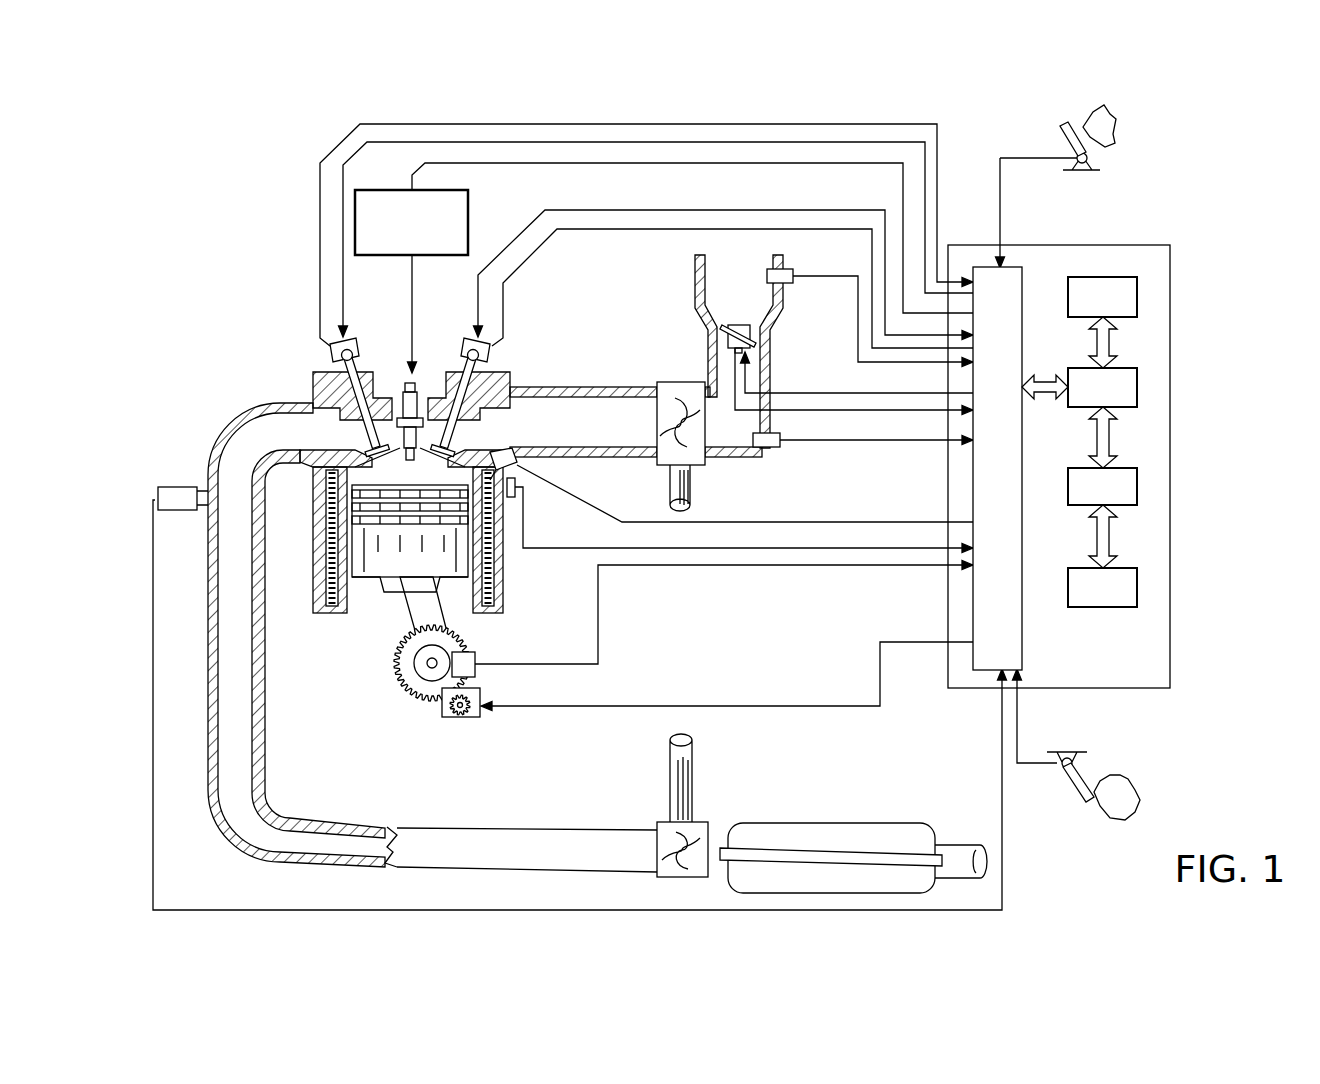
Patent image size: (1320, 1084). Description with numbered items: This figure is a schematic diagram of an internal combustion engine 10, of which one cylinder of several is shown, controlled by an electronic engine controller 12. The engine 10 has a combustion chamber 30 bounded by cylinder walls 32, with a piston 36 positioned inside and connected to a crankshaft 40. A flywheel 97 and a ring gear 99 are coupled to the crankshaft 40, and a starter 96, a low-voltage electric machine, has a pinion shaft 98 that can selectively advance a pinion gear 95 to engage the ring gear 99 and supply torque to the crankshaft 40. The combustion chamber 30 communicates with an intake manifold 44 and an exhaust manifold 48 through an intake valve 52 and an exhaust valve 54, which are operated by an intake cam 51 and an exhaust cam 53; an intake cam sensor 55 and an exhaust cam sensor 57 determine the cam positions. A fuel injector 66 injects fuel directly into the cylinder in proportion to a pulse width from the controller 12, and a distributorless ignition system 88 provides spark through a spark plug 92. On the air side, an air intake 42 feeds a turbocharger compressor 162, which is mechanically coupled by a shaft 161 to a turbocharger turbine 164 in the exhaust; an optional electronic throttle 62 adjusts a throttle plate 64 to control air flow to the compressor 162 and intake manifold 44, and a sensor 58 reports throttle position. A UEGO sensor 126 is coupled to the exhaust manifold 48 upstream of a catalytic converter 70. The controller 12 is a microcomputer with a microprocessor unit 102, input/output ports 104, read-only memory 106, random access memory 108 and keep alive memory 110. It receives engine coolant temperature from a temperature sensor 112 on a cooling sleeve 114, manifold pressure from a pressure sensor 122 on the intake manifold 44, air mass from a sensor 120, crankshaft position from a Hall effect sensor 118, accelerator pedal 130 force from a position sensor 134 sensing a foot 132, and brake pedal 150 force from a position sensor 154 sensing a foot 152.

The internal combustion engine 10 is at (250, 326).
The electronic engine controller 12 is at (1160, 245).
The combustion chamber 30 is at (405, 468).
The cylinder walls 32 is at (355, 600).
The piston 36 is at (393, 563).
The crankshaft 40 is at (414, 694).
The air intake 42 is at (726, 303).
The intake manifold 44 is at (571, 435).
The exhaust manifold 48 is at (270, 444).
The intake cam 51 is at (470, 332).
The intake valve 52 is at (455, 433).
The exhaust cam 53 is at (350, 332).
The exhaust valve 54 is at (345, 412).
The intake cam sensor 55 is at (488, 352).
The exhaust cam sensor 57 is at (325, 355).
The throttle position sensor 58 is at (715, 350).
The electronic throttle 62 is at (745, 331).
The throttle plate 64 is at (723, 337).
The fuel injector 66 is at (518, 466).
The catalytic converter 70 is at (767, 822).
The distributorless ignition system 88 is at (368, 190).
The spark plug 92 is at (414, 378).
The pinion gear 95 is at (473, 720).
The starter 96 is at (470, 720).
The flywheel 97 is at (414, 658).
The pinion shaft 98 is at (457, 720).
The ring gear 99 is at (430, 704).
The microprocessor unit 102 is at (1140, 388).
The input/output ports 104 is at (1023, 278).
The read-only memory 106 is at (1138, 295).
The random access memory 108 is at (1140, 486).
The keep alive memory 110 is at (1140, 586).
The temperature sensor 112 is at (516, 497).
The cooling sleeve 114 is at (492, 568).
The Hall effect sensor 118 is at (474, 652).
The air mass sensor 120 is at (784, 269).
The pressure sensor 122 is at (777, 448).
The Universal Exhaust Gas Oxygen sensor 126 is at (158, 492).
The accelerator pedal 130 is at (1062, 136).
The foot 132 is at (1117, 124).
The position sensor 134 is at (1102, 158).
The brake pedal 150 is at (1091, 808).
The foot 152 is at (1124, 776).
The position sensor 154 is at (1057, 760).
The shaft 161 is at (670, 478).
The turbocharger compressor 162 is at (657, 384).
The turbocharger turbine 164 is at (660, 822).